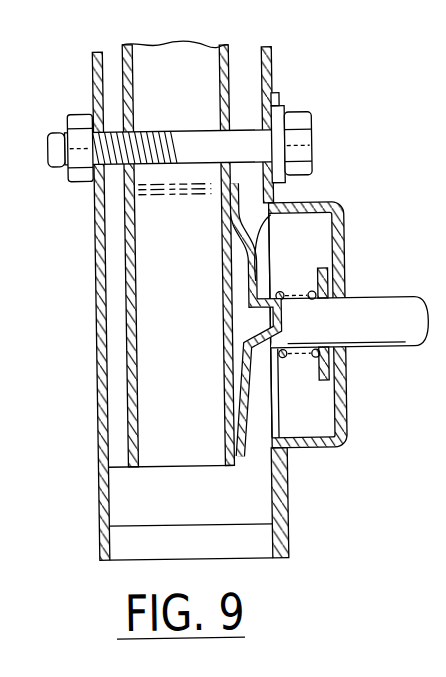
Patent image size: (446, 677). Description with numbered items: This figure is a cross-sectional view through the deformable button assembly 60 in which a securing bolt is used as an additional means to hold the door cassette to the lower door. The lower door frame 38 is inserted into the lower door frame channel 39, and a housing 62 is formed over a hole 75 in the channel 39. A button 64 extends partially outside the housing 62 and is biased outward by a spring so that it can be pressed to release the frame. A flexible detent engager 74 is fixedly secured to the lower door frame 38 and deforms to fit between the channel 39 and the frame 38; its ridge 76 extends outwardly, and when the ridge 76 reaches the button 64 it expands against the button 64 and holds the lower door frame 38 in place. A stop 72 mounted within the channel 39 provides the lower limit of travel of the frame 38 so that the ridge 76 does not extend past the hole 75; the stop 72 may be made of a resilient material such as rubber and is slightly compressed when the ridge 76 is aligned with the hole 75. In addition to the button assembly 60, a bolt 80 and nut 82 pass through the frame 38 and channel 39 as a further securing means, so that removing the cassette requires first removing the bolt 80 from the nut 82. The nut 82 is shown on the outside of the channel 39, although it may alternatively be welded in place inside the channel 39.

The lower door frame 38 is at (226, 46).
The lower door frame channel 39 is at (271, 49).
The deformable button assembly 60 is at (338, 138).
The housing 62 is at (344, 220).
The button 64 is at (402, 306).
The stop 72 is at (130, 496).
The flexible detent engager 74 is at (236, 428).
The hole 75 is at (284, 219).
The ridge 76 is at (277, 393).
The bolt 80 is at (298, 120).
The nut 82 is at (80, 118).